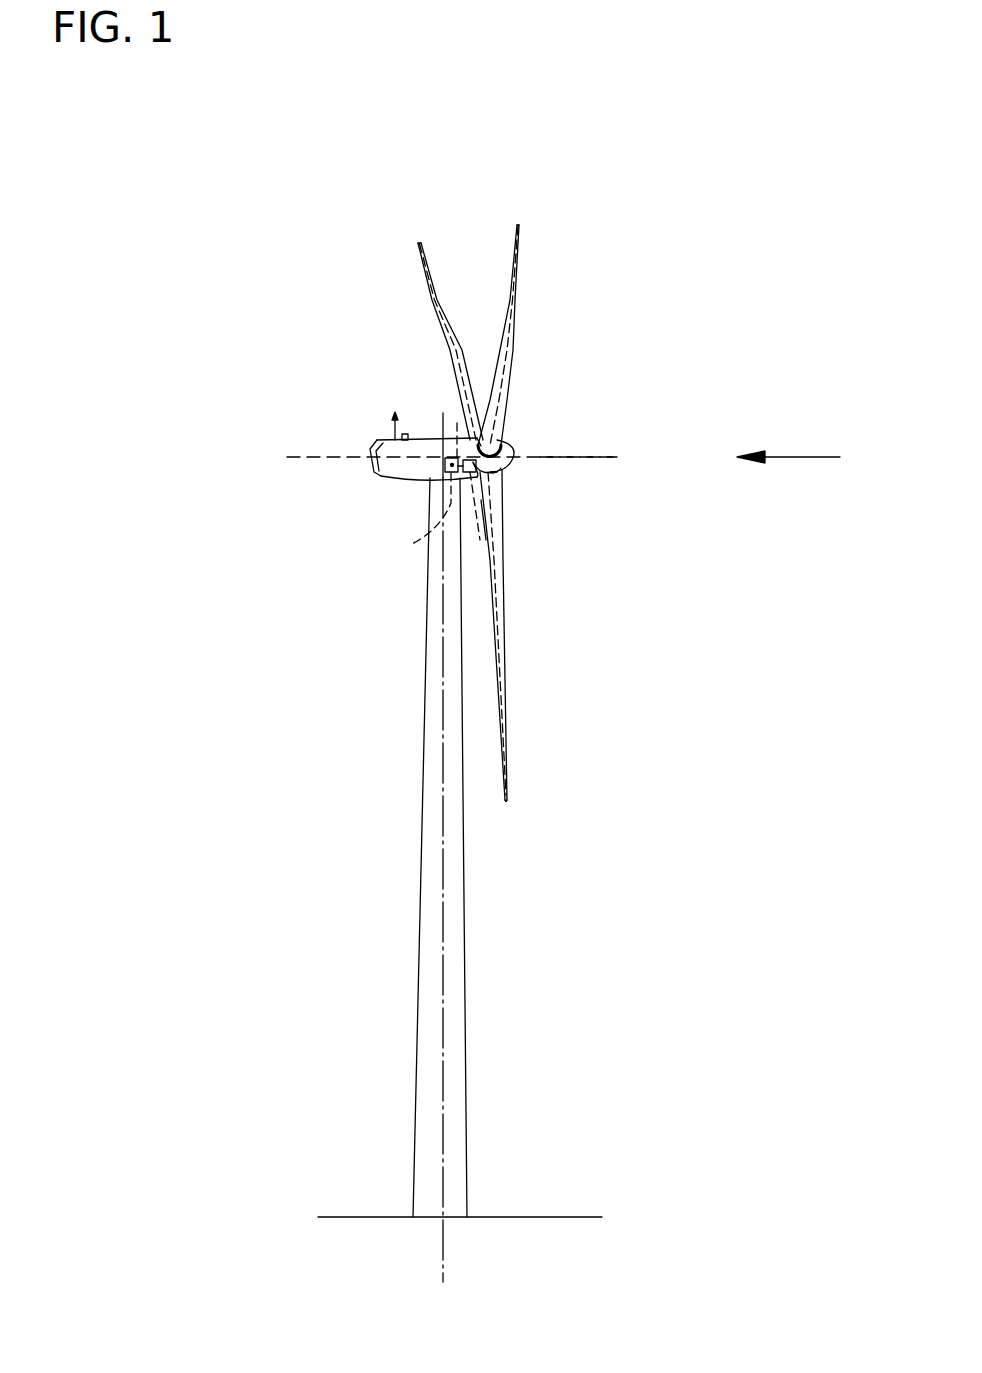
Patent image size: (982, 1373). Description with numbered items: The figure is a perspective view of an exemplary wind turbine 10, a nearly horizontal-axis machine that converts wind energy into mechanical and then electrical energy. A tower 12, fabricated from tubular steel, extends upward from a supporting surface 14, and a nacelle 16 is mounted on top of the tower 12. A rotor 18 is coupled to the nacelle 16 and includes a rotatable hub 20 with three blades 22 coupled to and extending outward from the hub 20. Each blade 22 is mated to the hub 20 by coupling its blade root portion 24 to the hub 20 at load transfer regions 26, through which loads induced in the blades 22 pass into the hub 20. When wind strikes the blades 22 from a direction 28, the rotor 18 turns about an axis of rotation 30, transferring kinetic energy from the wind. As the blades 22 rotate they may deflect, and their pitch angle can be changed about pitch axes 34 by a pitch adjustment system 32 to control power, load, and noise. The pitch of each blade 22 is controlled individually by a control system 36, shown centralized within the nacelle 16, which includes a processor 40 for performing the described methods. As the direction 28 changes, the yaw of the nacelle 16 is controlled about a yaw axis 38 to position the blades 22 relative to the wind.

The wind turbine 10 is at (210, 256).
The tower 12 is at (416, 1000).
The supporting surface 14 is at (373, 1217).
The nacelle 16 is at (402, 478).
The rotor 18 is at (520, 363).
The hub 20 is at (505, 452).
The blade 22 is at (440, 307).
The blade root portion 24 is at (500, 565).
The load transfer regions 26 is at (497, 473).
The direction 28 is at (805, 457).
The axis of rotation 30 is at (573, 457).
The pitch adjustment system 32 is at (490, 514).
The pitch axes 34 is at (418, 248).
The control system 36 is at (410, 545).
The yaw axis 38 is at (450, 922).
The processor 40 is at (457, 423).